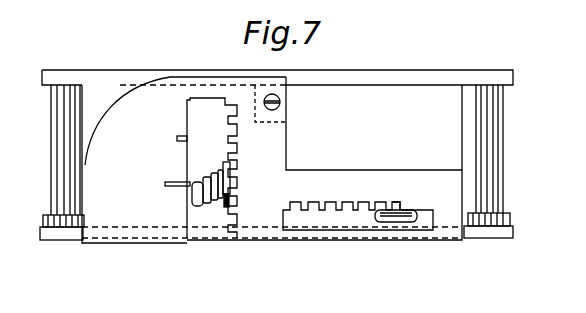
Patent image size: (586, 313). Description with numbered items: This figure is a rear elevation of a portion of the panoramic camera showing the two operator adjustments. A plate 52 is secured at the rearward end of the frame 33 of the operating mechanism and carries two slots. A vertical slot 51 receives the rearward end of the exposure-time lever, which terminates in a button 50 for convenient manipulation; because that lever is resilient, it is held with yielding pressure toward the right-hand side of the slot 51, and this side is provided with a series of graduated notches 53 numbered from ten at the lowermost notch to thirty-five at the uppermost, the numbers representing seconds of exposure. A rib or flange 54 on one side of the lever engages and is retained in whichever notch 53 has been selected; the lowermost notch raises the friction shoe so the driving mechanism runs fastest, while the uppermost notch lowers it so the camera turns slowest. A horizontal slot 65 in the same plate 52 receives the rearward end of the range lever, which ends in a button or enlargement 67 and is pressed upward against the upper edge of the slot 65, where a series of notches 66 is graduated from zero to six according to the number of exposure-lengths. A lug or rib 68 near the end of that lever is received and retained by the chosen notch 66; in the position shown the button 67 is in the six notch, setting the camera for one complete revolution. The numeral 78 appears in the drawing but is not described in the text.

The frame 33 is at (62, 63).
The button 50 is at (224, 206).
The vertical slot 51 is at (203, 103).
The plate 52 is at (185, 121).
The notches 53 is at (230, 162).
The rib or flange 54 is at (240, 182).
The horizontal slot 65 is at (328, 230).
The notches 66 is at (327, 211).
The button or enlargement 67 is at (404, 223).
The lug or rib 68 is at (398, 201).
The arm 78 is at (175, 186).